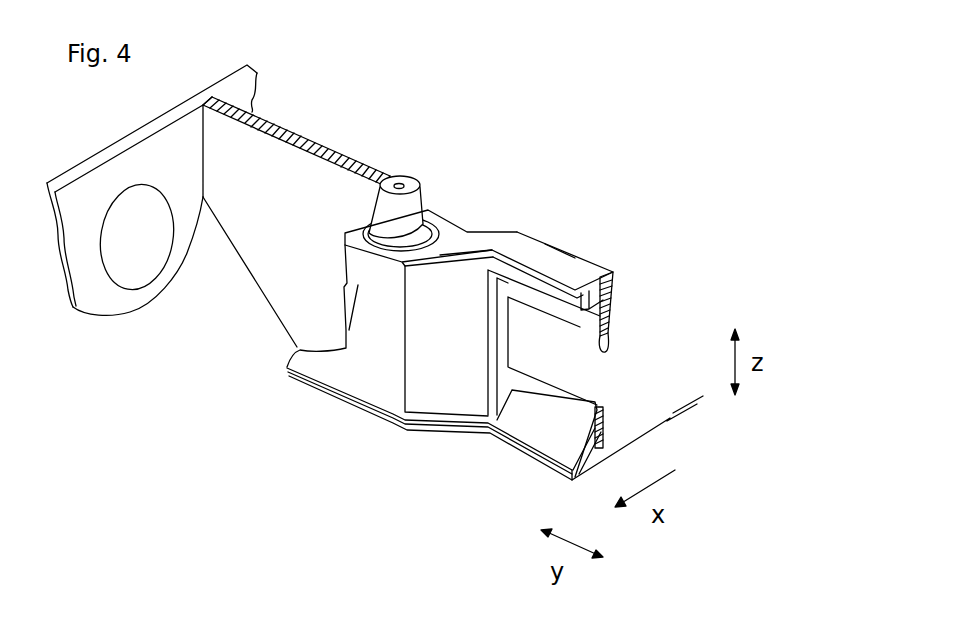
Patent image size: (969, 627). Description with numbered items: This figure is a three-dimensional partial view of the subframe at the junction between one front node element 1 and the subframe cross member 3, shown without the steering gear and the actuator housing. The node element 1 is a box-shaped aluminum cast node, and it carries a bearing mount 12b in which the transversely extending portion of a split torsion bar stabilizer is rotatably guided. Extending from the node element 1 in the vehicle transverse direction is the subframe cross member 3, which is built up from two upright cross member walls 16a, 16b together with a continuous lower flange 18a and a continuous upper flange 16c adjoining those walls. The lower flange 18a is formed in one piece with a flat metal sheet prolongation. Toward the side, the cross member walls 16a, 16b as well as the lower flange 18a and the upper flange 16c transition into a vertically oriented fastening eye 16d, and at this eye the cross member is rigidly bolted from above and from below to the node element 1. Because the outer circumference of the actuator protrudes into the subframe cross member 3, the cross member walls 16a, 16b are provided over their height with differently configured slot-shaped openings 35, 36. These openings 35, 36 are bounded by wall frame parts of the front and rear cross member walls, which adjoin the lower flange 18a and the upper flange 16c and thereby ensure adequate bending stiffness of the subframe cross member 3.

The front node element 1 is at (292, 125).
The subframe cross member 3 is at (517, 231).
The bearing mount 12b is at (163, 273).
The cross member wall 16a is at (523, 277).
The cross member wall 16b is at (612, 298).
The upper flange 16c is at (532, 253).
The fastening eye 16d is at (375, 350).
The lower flange 18a is at (597, 473).
The slot-shaped opening 35 is at (564, 260).
The slot-shaped opening 36 is at (603, 353).